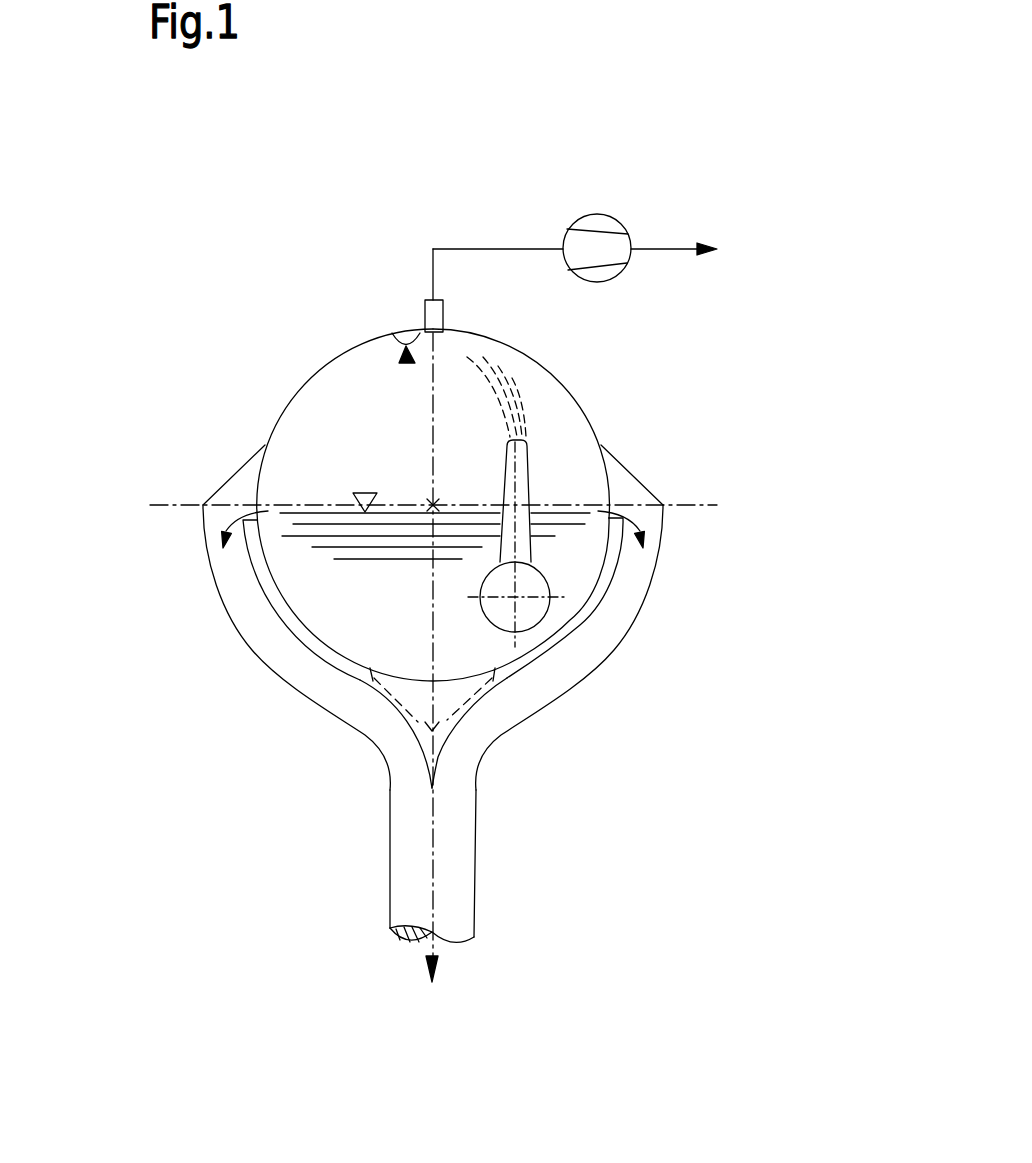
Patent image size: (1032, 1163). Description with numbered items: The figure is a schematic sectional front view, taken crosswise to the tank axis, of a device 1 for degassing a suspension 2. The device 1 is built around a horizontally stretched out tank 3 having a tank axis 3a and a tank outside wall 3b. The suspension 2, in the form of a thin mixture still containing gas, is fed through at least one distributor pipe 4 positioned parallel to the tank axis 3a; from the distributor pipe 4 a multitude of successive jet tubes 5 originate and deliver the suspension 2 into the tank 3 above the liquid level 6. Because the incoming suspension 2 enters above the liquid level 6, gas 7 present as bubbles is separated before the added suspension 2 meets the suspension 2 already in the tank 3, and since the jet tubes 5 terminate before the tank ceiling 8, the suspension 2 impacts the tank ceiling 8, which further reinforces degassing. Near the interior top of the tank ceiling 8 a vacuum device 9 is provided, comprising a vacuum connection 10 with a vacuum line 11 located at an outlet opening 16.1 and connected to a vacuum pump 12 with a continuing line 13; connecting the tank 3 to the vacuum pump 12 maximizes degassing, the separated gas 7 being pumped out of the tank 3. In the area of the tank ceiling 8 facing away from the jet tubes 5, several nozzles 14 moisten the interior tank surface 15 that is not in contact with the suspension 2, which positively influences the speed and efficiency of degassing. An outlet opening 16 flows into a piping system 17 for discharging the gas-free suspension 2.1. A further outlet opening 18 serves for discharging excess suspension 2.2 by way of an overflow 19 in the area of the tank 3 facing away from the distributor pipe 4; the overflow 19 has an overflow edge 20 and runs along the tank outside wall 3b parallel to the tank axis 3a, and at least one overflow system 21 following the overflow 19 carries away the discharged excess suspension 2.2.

The device 1 is at (278, 240).
The suspension 2 is at (500, 388).
The gas-free suspension 2.1 is at (450, 700).
The excess suspension 2.2 is at (296, 672).
The tank 3 is at (336, 362).
The tank axis 3a is at (430, 502).
The tank outside wall 3b is at (593, 423).
The distributor pipe 4 is at (540, 618).
The jet tubes 5 is at (531, 478).
The liquid level 6 is at (353, 494).
The gas 7 is at (380, 370).
The tank ceiling 8 is at (553, 374).
The vacuum device 9 is at (531, 177).
The vacuum connection 10 is at (430, 299).
The vacuum line 11 is at (492, 250).
The vacuum pump 12 is at (598, 214).
The continuing line 13 is at (670, 245).
The nozzles 14 is at (403, 334).
The interior tank surface 15 is at (538, 361).
The outlet opening 16 is at (393, 671).
The outlet opening 16.1 is at (424, 332).
The piping system 17 is at (403, 722).
The outlet opening 18 is at (257, 482).
The overflow 19 is at (225, 512).
The overflow edge 20 is at (247, 533).
The overflow system 21 is at (362, 912).